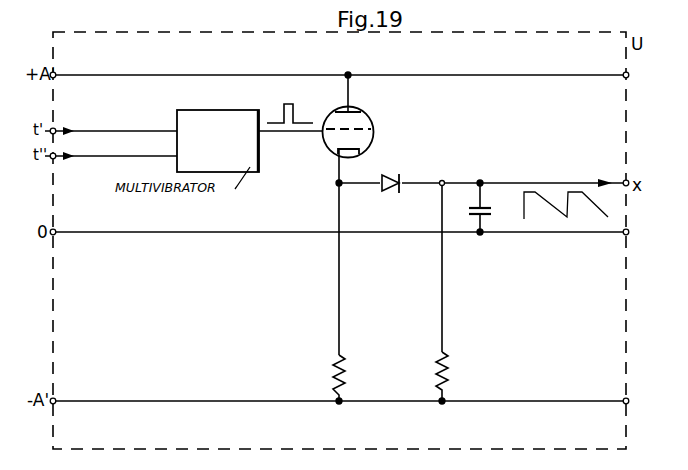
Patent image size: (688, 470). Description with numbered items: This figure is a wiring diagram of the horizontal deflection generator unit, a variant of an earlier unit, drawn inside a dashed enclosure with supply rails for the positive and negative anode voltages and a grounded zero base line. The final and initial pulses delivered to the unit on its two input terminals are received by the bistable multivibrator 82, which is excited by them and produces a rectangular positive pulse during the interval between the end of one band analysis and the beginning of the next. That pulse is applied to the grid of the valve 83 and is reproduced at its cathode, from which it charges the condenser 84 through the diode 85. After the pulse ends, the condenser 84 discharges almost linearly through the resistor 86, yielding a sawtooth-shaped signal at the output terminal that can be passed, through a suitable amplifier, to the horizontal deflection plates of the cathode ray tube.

The bistable multivibrator 82 is at (229, 106).
The valve 83 is at (369, 106).
The condenser 84 is at (484, 212).
The diode 85 is at (394, 191).
The resistor 86 is at (446, 378).